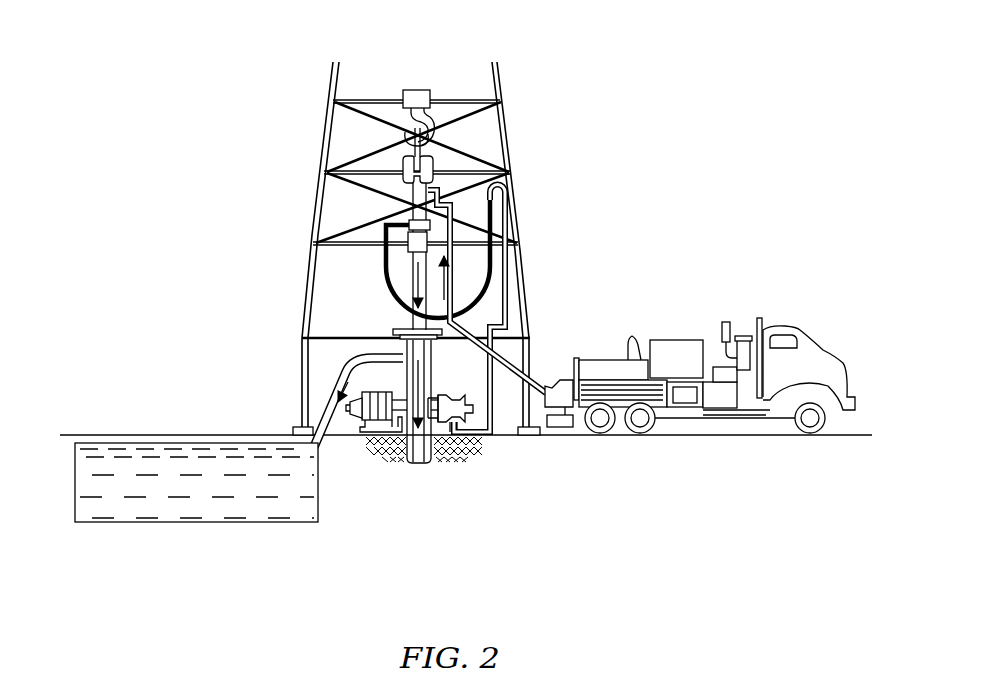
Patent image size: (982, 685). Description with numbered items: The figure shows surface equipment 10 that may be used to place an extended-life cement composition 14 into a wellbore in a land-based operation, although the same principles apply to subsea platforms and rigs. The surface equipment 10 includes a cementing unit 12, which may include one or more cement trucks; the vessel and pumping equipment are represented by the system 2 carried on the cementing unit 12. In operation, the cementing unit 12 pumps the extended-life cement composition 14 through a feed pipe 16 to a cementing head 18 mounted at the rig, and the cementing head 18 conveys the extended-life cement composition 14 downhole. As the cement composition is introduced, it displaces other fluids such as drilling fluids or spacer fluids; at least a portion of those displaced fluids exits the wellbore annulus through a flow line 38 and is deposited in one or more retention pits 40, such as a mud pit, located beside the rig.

The system 2 is at (686, 317).
The surface equipment 10 is at (734, 96).
The cementing unit 12 is at (748, 418).
The extended-life cement composition 14 is at (408, 276).
The feed pipe 16 is at (500, 357).
The cementing head 18 is at (449, 162).
The flow line 38 is at (340, 420).
The retention pit 40 is at (122, 522).